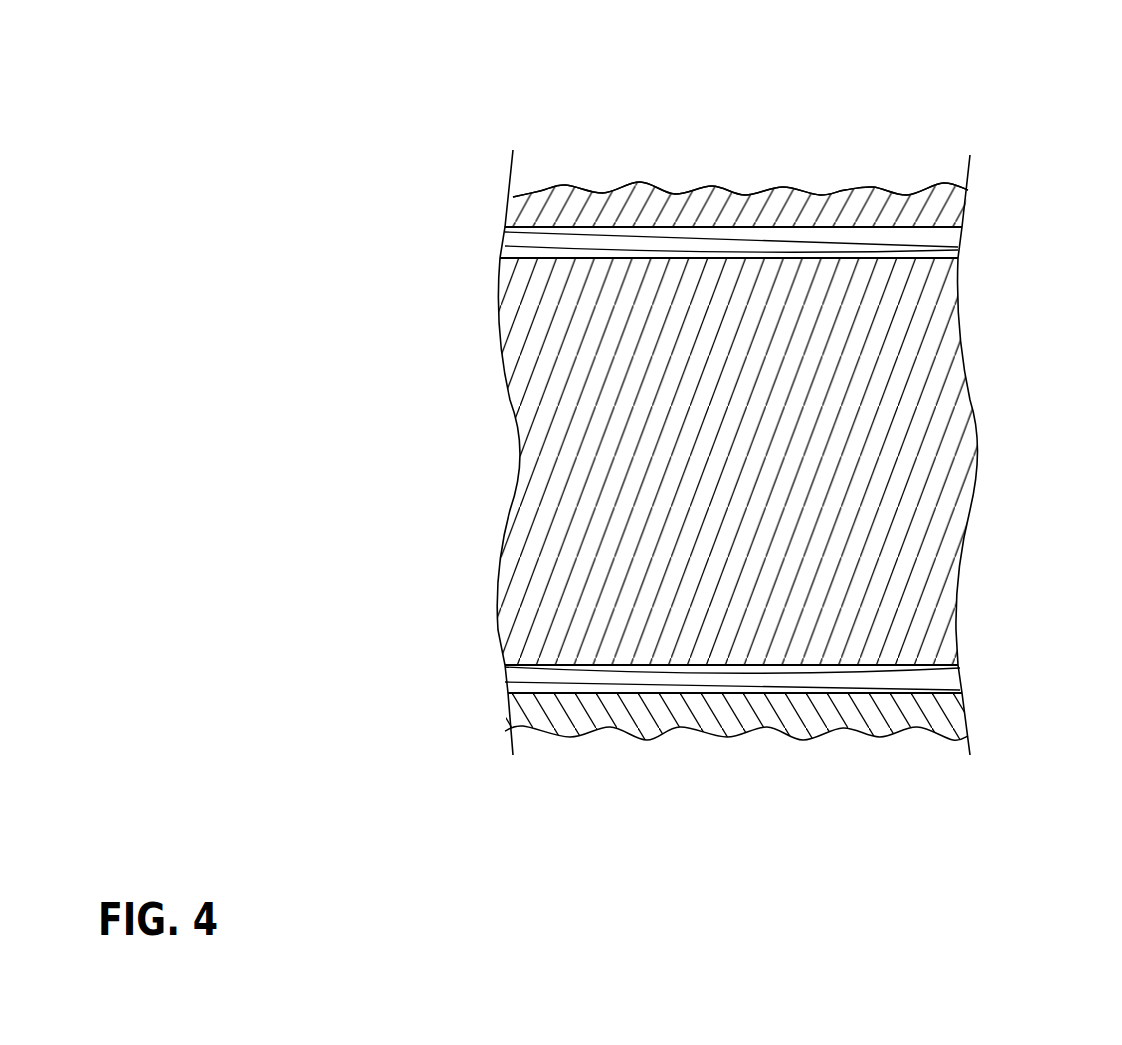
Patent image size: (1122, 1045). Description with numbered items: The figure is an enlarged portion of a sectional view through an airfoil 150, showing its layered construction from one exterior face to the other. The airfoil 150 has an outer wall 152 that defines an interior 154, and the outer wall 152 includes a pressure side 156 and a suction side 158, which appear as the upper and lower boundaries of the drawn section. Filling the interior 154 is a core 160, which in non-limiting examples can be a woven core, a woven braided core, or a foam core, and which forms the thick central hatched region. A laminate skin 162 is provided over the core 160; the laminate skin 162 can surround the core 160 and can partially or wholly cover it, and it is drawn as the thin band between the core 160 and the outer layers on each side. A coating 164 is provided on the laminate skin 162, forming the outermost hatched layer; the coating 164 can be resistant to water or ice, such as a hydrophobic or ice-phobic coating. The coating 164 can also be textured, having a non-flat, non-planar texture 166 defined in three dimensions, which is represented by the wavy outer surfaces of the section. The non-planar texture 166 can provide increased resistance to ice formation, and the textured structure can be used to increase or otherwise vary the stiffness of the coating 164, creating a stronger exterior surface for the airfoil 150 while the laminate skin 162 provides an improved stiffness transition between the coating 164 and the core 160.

The airfoil 150 is at (771, 445).
The outer wall 152 is at (801, 138).
The interior 154 is at (789, 461).
The pressure side 156 is at (693, 730).
The suction side 158 is at (679, 193).
The core 160 is at (927, 480).
The laminate skin 162 is at (942, 237).
The coating 164 is at (937, 217).
The non-planar texture 166 is at (604, 193).